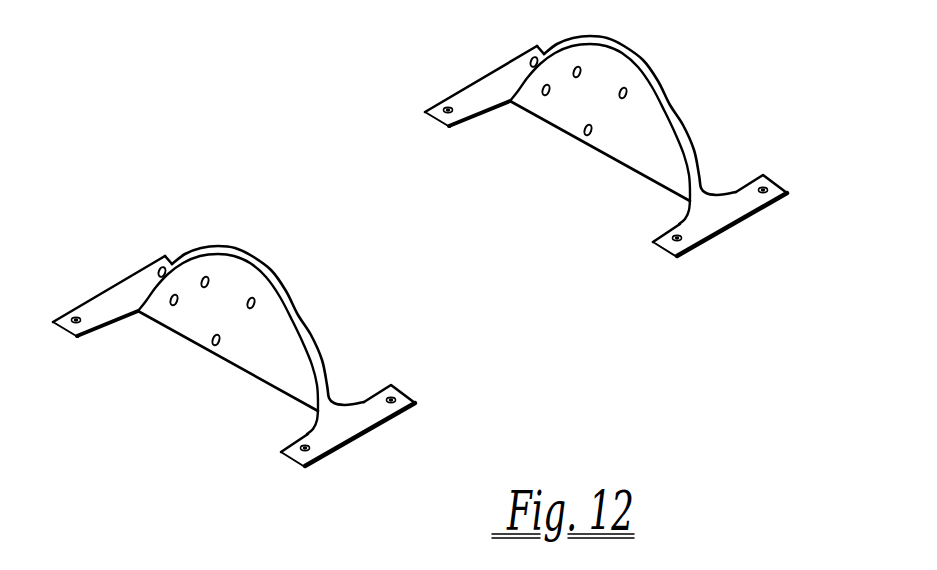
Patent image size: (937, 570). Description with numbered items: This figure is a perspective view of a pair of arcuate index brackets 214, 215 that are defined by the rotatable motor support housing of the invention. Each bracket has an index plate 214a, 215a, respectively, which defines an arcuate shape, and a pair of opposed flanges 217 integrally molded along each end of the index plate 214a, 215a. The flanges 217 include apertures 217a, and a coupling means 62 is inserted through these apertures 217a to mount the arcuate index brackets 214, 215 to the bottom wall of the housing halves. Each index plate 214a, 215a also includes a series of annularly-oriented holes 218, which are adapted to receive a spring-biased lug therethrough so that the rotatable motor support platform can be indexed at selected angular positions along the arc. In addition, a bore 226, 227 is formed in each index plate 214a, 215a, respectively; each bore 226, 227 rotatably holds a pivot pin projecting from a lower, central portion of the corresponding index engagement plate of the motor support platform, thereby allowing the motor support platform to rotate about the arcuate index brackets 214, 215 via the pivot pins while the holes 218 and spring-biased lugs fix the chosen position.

The arcuate index bracket 215 is at (786, 182).
The index plate 215a is at (552, 112).
The flange 217 is at (462, 90).
The aperture 217a is at (700, 224).
The annularly-oriented hole 218 is at (582, 67).
The bore 227 is at (586, 136).
The arcuate index bracket 214 is at (97, 329).
The index plate 214a is at (270, 383).
The bore 226 is at (213, 346).
The coupling means 62 is at (416, 402).